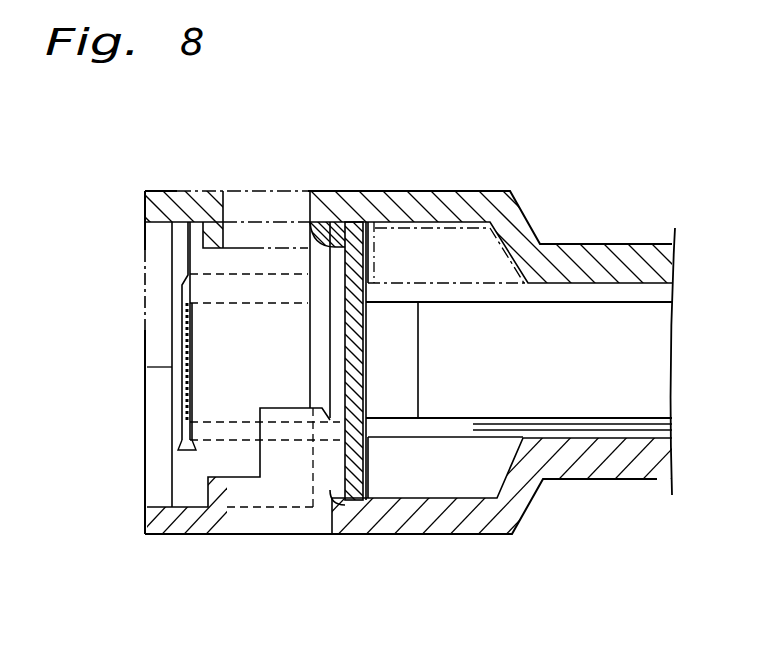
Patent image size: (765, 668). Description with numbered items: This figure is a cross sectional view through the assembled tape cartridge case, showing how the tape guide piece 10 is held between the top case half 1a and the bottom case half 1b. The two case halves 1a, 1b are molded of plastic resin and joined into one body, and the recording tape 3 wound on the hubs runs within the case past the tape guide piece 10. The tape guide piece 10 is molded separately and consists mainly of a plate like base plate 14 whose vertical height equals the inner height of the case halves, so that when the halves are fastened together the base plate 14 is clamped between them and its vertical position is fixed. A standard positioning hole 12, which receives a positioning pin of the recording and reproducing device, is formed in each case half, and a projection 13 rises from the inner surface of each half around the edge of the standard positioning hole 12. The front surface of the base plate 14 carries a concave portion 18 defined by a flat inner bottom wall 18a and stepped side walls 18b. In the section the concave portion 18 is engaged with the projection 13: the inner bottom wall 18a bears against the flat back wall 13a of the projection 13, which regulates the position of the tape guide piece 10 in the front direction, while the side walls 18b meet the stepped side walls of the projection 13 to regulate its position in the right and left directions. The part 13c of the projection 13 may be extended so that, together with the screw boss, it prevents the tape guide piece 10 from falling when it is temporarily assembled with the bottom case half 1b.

The top case half 1a is at (422, 291).
The bottom case half 1b is at (437, 536).
The recording tape 3 is at (175, 333).
The tape guide piece 10 is at (307, 318).
The standard positioning hole 12 is at (246, 205).
The projection 13 is at (347, 487).
The flat back wall 13a is at (377, 482).
The extended part of projection 13c is at (283, 403).
The base plate 14 is at (367, 388).
The concave portion 18 is at (340, 368).
The flat inner bottom wall 18a is at (312, 215).
The side wall of concave portion 18b is at (320, 338).